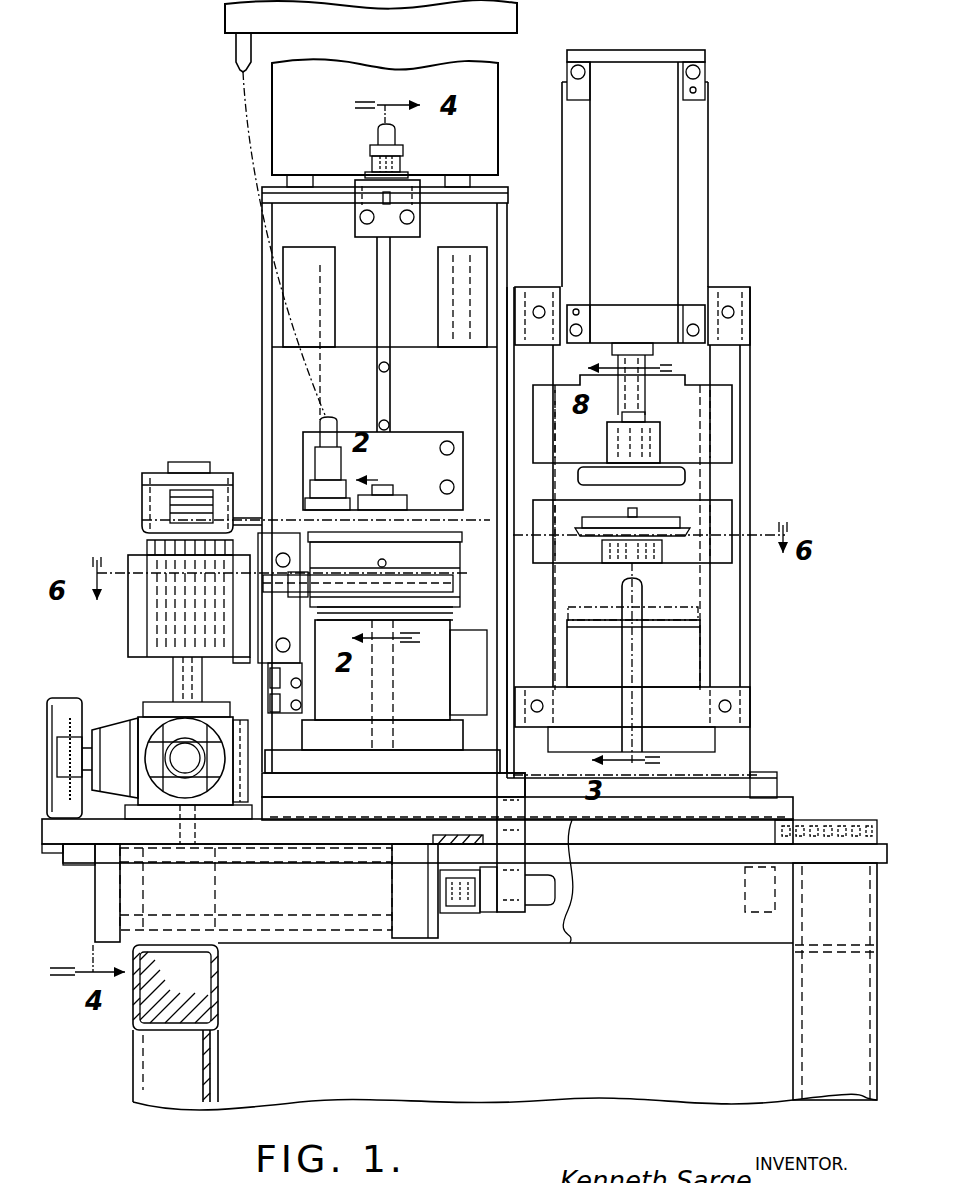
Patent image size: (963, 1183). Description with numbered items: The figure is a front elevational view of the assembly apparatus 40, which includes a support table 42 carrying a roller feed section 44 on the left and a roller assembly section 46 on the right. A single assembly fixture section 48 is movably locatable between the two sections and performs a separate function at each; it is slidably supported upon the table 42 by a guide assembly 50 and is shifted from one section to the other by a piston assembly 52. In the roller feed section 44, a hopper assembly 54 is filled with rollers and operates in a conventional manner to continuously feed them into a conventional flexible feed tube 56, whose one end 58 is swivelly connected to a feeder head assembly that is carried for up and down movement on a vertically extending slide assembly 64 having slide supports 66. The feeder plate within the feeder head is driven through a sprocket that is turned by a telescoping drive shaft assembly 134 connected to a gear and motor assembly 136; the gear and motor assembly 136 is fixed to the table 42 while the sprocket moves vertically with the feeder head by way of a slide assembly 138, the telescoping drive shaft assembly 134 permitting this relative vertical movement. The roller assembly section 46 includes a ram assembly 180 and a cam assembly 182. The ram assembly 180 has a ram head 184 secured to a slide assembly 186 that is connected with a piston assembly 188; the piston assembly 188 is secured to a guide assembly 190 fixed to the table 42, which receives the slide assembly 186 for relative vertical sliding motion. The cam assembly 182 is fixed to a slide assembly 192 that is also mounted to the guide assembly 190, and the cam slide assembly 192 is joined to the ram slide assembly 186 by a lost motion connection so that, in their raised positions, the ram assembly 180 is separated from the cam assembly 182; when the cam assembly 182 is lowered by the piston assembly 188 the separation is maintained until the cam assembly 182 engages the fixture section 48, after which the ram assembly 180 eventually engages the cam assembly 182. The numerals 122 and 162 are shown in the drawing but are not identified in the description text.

The assembly apparatus 40 is at (100, 1036).
The support table 42 is at (265, 1090).
The roller feed section 44 is at (238, 337).
The roller assembly section 46 is at (785, 310).
The assembly fixture section 48 is at (678, 662).
The guide assembly 50 is at (528, 790).
The piston assembly 52 is at (292, 926).
The hopper assembly 54 is at (236, 38).
The flexible feed tube 56 is at (320, 420).
The feed tube end 58 is at (352, 498).
The slide assembly 64 is at (418, 335).
The slide supports 66 is at (300, 300).
The indexing mechanism housing 122 is at (232, 472).
The drive shaft assembly 134 is at (145, 532).
The gear and motor assembly 136 is at (124, 712).
The slide assembly 138 is at (125, 563).
The ejector pin 162 is at (636, 593).
The ram assembly 180 is at (728, 430).
The cam assembly 182 is at (729, 527).
The ram head 184 is at (682, 480).
The slide assembly 186 is at (725, 402).
The piston assembly 188 is at (704, 206).
The guide assembly 190 is at (758, 444).
The slide assembly 192 is at (690, 560).